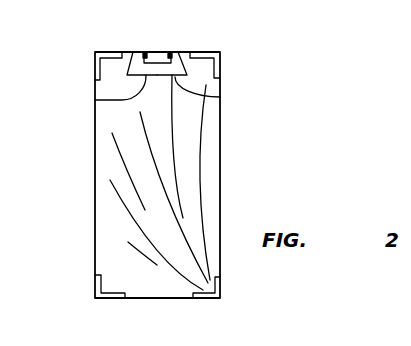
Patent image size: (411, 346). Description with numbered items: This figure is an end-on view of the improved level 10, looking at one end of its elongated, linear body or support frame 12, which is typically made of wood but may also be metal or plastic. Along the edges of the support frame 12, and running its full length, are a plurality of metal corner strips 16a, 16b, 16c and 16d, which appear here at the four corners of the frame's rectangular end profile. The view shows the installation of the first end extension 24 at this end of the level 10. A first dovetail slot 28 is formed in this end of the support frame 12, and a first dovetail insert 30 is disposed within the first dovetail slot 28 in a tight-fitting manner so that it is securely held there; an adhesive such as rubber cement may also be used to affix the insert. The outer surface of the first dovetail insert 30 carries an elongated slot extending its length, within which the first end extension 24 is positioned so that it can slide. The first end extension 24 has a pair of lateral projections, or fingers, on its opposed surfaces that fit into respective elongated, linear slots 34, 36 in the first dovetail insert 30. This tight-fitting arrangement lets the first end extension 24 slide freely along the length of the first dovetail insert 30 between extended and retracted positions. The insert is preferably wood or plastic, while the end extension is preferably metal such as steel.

The level 10 is at (66, 174).
The support frame 12 is at (108, 220).
The metal corner strip 16a is at (96, 298).
The metal corner strip 16b is at (95, 53).
The metal corner strip 16c is at (221, 56).
The metal corner strip 16d is at (217, 298).
The first end extension 24 is at (160, 52).
The first dovetail slot 28 is at (95, 100).
The first dovetail insert 30 is at (220, 97).
The elongated linear slot 34 is at (144, 52).
The elongated linear slot 36 is at (171, 52).